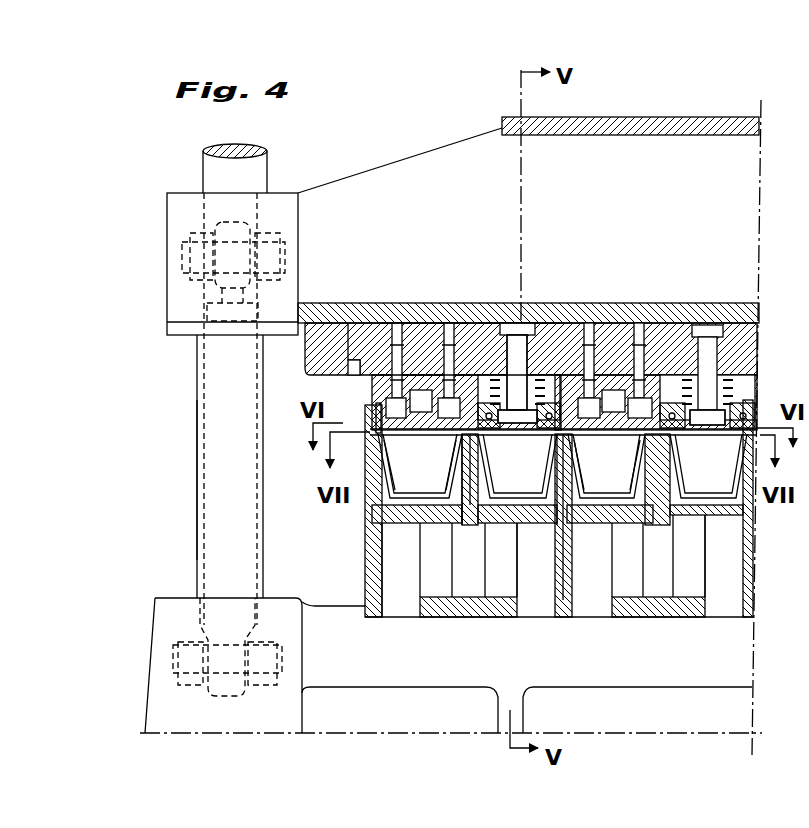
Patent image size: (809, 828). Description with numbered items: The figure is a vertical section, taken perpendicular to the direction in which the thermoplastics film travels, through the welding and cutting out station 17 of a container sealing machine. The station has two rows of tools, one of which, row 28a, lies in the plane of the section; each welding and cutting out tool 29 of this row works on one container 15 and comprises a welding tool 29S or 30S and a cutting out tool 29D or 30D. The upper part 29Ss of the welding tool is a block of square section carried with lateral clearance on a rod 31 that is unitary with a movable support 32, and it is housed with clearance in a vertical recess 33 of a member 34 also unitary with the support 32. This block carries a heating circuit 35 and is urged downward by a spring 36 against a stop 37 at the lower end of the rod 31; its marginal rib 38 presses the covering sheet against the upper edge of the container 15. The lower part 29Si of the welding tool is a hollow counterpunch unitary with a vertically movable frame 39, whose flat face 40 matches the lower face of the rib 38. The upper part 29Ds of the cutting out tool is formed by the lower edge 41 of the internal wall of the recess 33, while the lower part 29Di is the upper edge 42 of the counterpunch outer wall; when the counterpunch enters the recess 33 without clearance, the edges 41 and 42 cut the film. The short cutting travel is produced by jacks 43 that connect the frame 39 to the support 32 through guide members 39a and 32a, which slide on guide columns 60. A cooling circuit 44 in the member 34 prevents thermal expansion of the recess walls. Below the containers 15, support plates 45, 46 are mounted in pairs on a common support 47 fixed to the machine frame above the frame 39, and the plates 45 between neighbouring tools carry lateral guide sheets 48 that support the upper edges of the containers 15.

The container 15 is at (562, 467).
The welding and cutting out station 17 is at (447, 168).
The row of welding and cutting out tools 28a is at (361, 468).
The welding and cutting out tool 29 is at (658, 530).
The cutting out tool 29D is at (518, 275).
The welding tool 29S is at (498, 292).
The upper part of the cutting out tool 29Ds is at (468, 420).
The upper part of the welding tool 29Ss is at (562, 345).
The lower part of the welding tool 29Si is at (478, 504).
The lower part of the cutting out tool 29Di is at (557, 505).
The cutting out tool 30D is at (425, 275).
The welding tool 30S is at (420, 292).
The rod 31 is at (521, 335).
The movable support 32 is at (745, 326).
The guide member 32a is at (285, 207).
The vertical recess 33 is at (558, 392).
The member 34 is at (372, 384).
The heating circuit 35 is at (488, 420).
The spring 36 is at (494, 380).
The stop 37 is at (520, 420).
The marginal rib 38 is at (588, 430).
The movable frame 39 is at (527, 687).
The guide member 39a is at (166, 606).
The flat face 40 is at (586, 434).
The lower edge 41 is at (448, 446).
The upper edge 42 is at (463, 460).
The jack 43 is at (205, 428).
The cooling circuit 44 is at (422, 388).
The support plate 45 is at (400, 515).
The support plate 46 is at (531, 510).
The common support 47 is at (430, 607).
The lateral guide sheet 48 is at (370, 482).
The guide column 60 is at (209, 164).